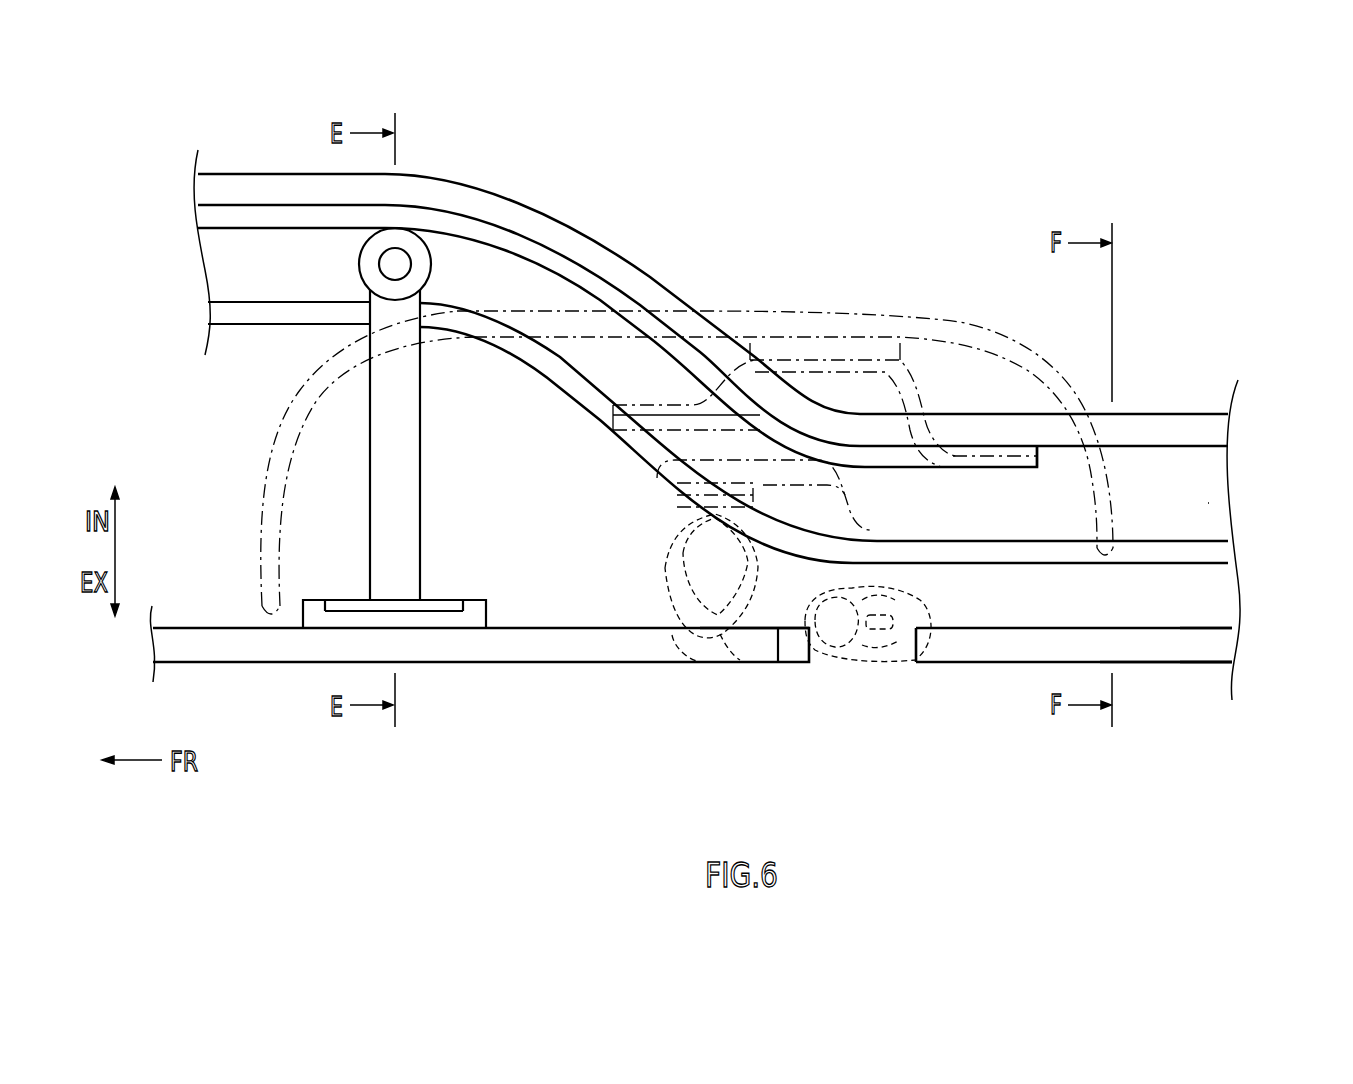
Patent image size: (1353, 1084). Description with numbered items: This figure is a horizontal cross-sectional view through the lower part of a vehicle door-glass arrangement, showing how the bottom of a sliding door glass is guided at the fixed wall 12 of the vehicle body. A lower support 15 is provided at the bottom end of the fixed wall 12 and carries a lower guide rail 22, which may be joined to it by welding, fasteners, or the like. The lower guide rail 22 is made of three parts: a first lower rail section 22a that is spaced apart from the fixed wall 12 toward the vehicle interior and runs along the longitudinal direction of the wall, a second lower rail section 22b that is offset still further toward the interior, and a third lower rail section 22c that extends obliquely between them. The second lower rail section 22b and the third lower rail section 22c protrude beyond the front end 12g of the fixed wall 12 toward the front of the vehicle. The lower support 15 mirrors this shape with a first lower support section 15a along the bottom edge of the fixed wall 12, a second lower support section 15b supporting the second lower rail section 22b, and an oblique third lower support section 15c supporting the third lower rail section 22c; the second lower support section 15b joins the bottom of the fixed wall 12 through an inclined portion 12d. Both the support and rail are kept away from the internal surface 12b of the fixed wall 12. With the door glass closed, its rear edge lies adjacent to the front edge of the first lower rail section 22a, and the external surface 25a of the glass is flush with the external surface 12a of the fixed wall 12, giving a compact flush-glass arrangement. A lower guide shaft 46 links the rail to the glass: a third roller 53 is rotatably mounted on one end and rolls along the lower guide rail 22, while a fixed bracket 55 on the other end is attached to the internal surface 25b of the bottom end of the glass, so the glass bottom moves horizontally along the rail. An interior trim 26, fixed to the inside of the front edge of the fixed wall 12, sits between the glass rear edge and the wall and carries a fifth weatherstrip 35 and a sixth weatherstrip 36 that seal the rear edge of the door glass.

The fixed wall 12 is at (1150, 655).
The external surface of the fixed wall 12a is at (1005, 665).
The internal surface of the fixed wall 12b is at (1180, 621).
The inclined portion 12d is at (1230, 596).
The front end of the fixed wall 12g is at (912, 648).
The lower support 15 is at (584, 195).
The first lower support section 15a is at (1008, 426).
The second lower support section 15b is at (272, 183).
The third lower support section 15c is at (698, 328).
The lower guide rail 22 is at (1170, 432).
The first lower rail section 22a is at (1208, 503).
The second lower rail section 22b is at (255, 292).
The third lower rail section 22c is at (575, 297).
The external surface of the door glass 25a is at (508, 665).
The internal surface of the bottom end of the door glass 25b is at (558, 627).
The interior trim 26 is at (805, 313).
The fifth weatherstrip 35 is at (837, 658).
The sixth weatherstrip 36 is at (667, 633).
The lower guide shaft 46 is at (387, 454).
The third roller 53 is at (362, 262).
The fixed bracket 55 is at (325, 613).